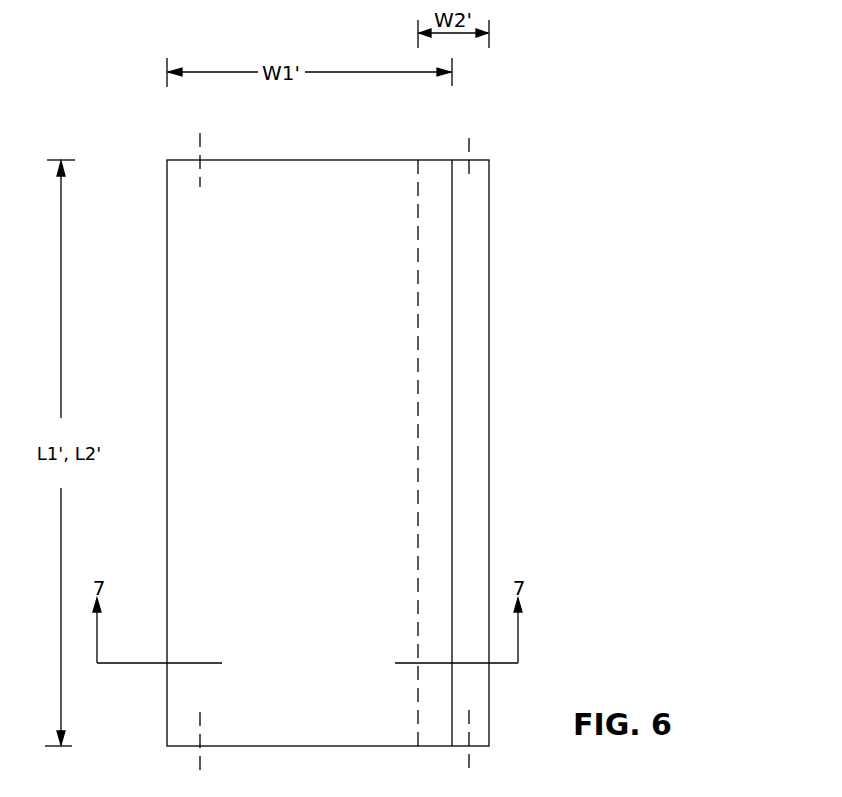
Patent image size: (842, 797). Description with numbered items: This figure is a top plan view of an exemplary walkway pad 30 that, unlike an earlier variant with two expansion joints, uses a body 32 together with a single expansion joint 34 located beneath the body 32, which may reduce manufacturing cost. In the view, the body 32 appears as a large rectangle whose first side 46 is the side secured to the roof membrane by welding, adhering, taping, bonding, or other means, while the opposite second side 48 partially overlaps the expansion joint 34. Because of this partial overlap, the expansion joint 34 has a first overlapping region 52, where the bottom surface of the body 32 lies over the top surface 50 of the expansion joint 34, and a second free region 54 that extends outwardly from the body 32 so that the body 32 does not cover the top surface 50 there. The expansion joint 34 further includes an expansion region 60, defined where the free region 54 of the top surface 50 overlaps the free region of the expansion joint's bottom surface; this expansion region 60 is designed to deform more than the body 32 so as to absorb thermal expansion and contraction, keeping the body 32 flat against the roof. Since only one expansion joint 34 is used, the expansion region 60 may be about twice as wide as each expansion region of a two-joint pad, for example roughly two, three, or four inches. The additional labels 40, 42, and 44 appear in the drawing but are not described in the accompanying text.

The walkway pad 30 is at (516, 74).
The body 32 is at (260, 205).
The expansion joint 34 is at (468, 430).
The main panel 40 is at (270, 343).
The fold line 42 is at (370, 160).
The bottom edge 44 is at (185, 747).
The first side 46 is at (166, 510).
The second side 48 is at (452, 495).
The top surface 50 is at (467, 365).
The first overlapping region 52 is at (437, 188).
The second free region 54 is at (476, 269).
The expansion region 60 is at (463, 200).